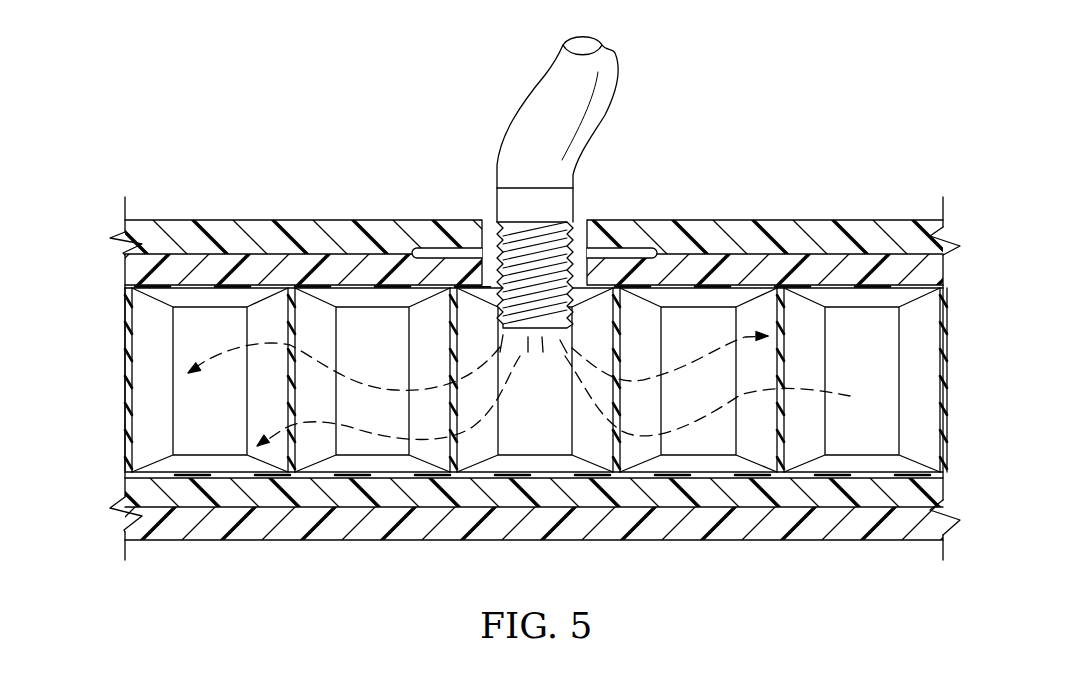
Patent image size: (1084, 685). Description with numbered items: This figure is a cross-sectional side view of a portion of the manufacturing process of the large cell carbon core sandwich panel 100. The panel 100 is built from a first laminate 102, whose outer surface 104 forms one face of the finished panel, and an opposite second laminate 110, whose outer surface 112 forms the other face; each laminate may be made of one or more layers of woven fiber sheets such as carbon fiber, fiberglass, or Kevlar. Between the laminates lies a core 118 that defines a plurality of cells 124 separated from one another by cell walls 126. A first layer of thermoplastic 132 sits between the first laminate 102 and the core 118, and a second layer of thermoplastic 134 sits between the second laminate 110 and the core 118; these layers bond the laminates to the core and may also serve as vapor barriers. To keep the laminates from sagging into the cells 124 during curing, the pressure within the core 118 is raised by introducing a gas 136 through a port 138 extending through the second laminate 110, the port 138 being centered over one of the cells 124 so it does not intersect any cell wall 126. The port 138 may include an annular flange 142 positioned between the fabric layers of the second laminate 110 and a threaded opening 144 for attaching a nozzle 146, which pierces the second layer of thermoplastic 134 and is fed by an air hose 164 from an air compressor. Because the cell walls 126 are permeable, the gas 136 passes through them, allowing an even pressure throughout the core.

The panel 100 is at (357, 108).
The first laminate 102 is at (786, 543).
The outer surface 104 is at (242, 541).
The second laminate 110 is at (297, 221).
The outer surface 112 is at (800, 220).
The core 118 is at (121, 348).
The cells 124 is at (370, 455).
The cell walls 126 is at (287, 332).
The first layer of thermoplastic 132 is at (216, 472).
The second layer of thermoplastic 134 is at (845, 290).
The gas 136 is at (237, 350).
The port 138 is at (583, 221).
The annular flange 142 is at (428, 248).
The threaded opening 144 is at (595, 247).
The nozzle 146 is at (497, 205).
The air hose 164 is at (530, 97).